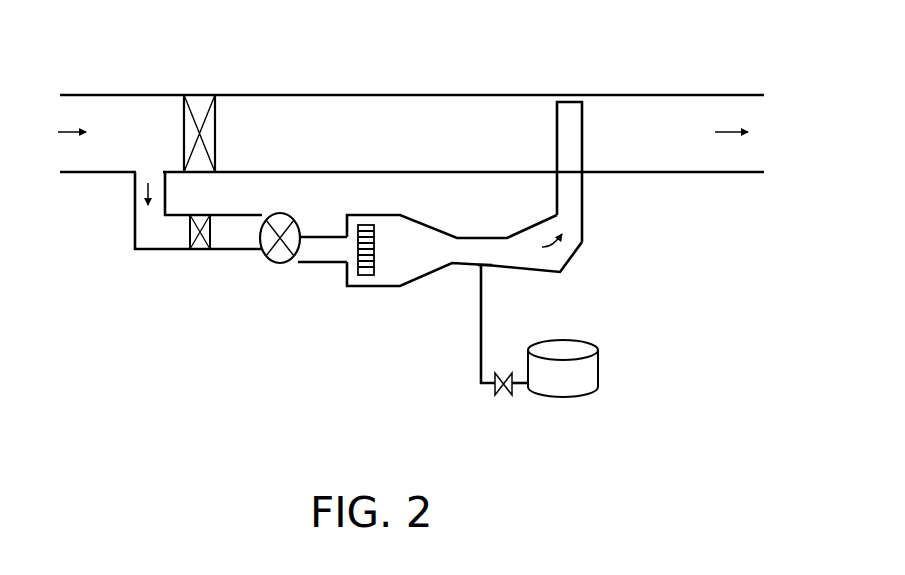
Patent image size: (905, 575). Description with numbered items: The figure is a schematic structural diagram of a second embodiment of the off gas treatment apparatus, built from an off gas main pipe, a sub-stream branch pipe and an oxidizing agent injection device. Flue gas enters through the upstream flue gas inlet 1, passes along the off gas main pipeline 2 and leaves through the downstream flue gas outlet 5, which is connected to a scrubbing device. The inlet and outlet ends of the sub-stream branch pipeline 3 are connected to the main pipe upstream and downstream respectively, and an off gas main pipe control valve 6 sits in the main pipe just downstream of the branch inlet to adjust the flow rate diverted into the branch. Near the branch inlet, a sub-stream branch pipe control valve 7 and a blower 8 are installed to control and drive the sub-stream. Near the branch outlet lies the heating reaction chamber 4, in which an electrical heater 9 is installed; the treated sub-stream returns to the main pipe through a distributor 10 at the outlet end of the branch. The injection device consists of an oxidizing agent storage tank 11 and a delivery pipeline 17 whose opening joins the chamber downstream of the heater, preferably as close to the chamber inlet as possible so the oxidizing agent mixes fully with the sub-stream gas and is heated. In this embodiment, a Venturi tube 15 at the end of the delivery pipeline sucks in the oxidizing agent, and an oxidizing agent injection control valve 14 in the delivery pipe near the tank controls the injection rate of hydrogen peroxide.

The upstream flue gas inlet 1 is at (43, 122).
The off gas main pipeline 2 is at (356, 120).
The sub-stream branch pipeline 3 is at (150, 225).
The heating reaction chamber 4 is at (395, 267).
The downstream flue gas outlet 5 is at (695, 125).
The off gas main pipe control valve 6 is at (215, 114).
The sub-stream branch pipe control valve 7 is at (197, 249).
The blower 8 is at (275, 267).
The heater 9 is at (358, 285).
The distributor 10 is at (577, 135).
The oxidizing agent storage tank 11 is at (580, 385).
The oxidizing agent injection control valve 14 is at (497, 407).
The Venturi tube 15 is at (485, 267).
The delivery pipeline 17 is at (480, 328).